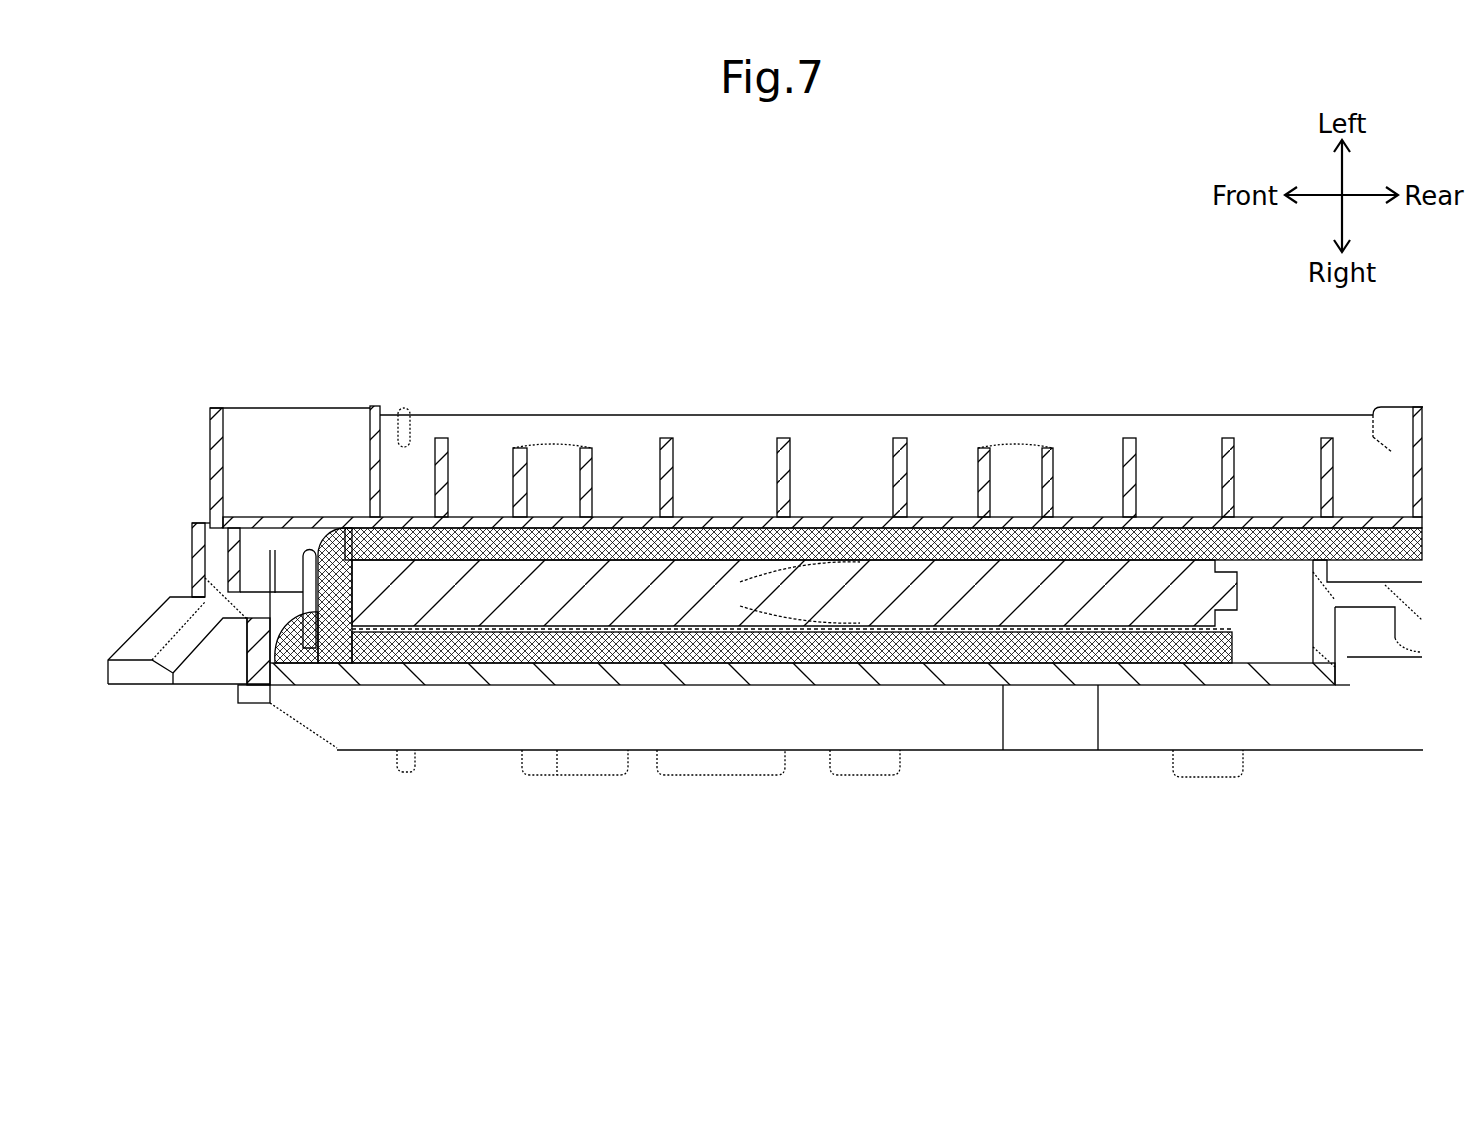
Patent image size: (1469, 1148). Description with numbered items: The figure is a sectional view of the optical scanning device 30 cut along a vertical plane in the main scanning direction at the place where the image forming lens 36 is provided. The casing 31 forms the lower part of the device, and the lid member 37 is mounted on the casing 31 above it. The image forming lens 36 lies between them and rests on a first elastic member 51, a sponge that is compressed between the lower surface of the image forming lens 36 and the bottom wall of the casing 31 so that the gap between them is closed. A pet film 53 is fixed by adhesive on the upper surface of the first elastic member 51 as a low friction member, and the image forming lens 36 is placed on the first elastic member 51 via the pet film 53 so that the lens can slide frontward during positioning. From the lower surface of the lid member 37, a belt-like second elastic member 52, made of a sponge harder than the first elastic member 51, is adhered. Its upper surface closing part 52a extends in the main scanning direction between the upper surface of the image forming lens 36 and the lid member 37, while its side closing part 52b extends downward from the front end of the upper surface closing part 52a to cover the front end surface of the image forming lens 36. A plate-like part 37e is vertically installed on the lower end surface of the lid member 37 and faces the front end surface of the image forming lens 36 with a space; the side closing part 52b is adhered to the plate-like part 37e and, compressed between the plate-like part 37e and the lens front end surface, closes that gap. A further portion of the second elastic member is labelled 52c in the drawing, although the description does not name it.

The optical scanning device 30 is at (427, 308).
The casing 31 is at (1332, 752).
The image forming lens 36 is at (972, 588).
The lid member 37 is at (268, 408).
The plate-like part 37e is at (303, 590).
The first elastic member 51 is at (733, 662).
The second elastic member 52 is at (308, 850).
The upper surface closing part 52a is at (535, 547).
The side closing part 52b is at (300, 653).
The cushion vertical portion 52c is at (343, 657).
The pet film 53 is at (627, 630).